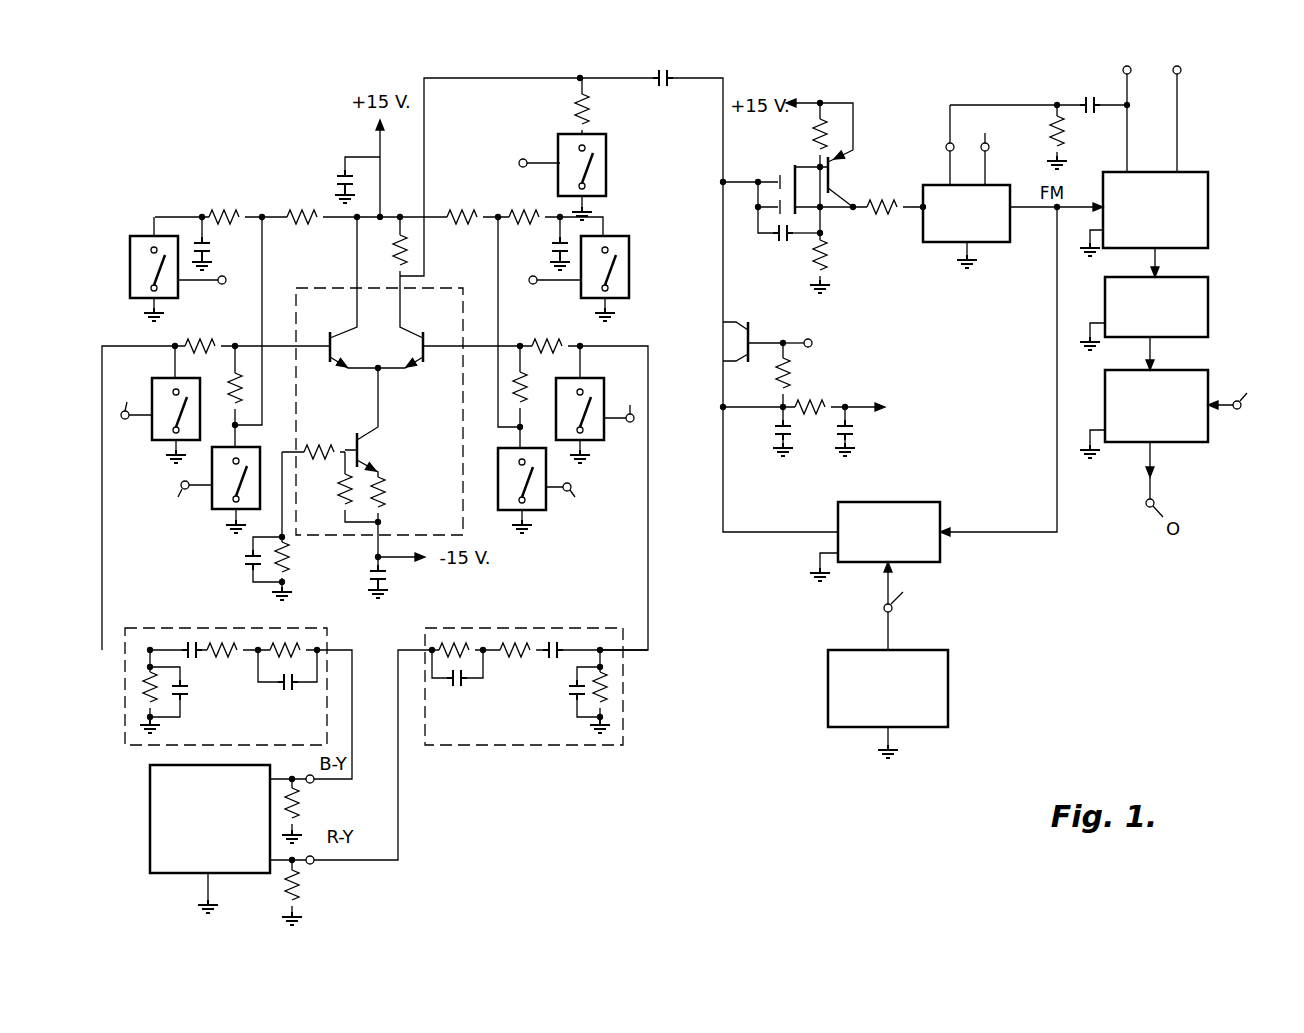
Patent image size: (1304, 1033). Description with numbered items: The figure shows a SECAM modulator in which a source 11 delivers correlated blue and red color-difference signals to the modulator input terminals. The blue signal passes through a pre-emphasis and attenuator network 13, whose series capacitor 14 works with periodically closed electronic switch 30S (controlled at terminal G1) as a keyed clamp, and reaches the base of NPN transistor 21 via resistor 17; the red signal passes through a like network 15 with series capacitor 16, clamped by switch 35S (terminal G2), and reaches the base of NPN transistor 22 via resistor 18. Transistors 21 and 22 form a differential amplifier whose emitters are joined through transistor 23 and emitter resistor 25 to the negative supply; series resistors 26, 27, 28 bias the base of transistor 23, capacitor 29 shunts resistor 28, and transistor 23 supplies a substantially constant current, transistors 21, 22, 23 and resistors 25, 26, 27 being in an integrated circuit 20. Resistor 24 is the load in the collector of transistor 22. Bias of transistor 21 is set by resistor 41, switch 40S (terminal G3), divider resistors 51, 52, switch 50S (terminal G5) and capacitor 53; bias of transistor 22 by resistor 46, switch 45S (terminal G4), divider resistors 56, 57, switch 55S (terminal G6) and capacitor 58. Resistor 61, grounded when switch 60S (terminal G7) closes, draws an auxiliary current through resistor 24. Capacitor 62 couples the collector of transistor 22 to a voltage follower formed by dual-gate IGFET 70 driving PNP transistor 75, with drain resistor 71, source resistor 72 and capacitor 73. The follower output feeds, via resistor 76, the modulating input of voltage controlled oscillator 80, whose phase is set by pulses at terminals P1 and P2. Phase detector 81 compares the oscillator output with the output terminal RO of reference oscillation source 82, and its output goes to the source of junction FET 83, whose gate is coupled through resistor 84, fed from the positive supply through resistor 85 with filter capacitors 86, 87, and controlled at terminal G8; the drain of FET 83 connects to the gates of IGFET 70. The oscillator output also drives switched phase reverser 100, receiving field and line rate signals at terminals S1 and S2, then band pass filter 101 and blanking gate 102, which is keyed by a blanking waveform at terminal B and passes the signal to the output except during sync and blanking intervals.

The source 11 is at (148, 823).
The B-Y signal pre-emphasis and attenuator network 13 is at (343, 633).
The series capacitor 14 is at (184, 642).
The R-Y signal pre-emphasis and attenuator network 15 is at (462, 627).
The series capacitor 16 is at (550, 662).
The resistor 17 is at (200, 334).
The resistor 18 is at (552, 335).
The integrated circuit 20 is at (437, 534).
The NPN transistor 21 is at (328, 336).
The NPN transistor 22 is at (425, 336).
The transistor 23 is at (352, 438).
The resistor 24 is at (392, 251).
The emitter resistor 25 is at (386, 492).
The resistor 26 is at (340, 504).
The resistor 27 is at (313, 469).
The resistor 28 is at (292, 560).
The capacitor 29 is at (246, 570).
The electronic switch 30S is at (156, 447).
The electronic switch 35S is at (603, 445).
The electronic switch 40S is at (212, 514).
The resistor 41 is at (231, 387).
The electronic switch 45S is at (547, 512).
The resistor 46 is at (526, 332).
The electronic switch 50S is at (130, 268).
The resistor 51 is at (304, 212).
The resistor 52 is at (228, 212).
The capacitor 53 is at (212, 250).
The electronic switch 55S is at (628, 264).
The resistor 56 is at (464, 208).
The resistor 57 is at (527, 208).
The capacitor 58 is at (552, 248).
The electronic switch 60S is at (605, 176).
The resistor 61 is at (592, 110).
The capacitor 62 is at (667, 68).
The insulated-gate field effect transistor 70 is at (778, 172).
The resistor 71 is at (810, 146).
The resistor 72 is at (832, 258).
The capacitor 73 is at (778, 246).
The PNP transistor 75 is at (825, 188).
The resistor 76 is at (889, 199).
The voltage controlled oscillator 80 is at (935, 246).
The phase detector 81 is at (900, 500).
The reference oscillation source 82 is at (912, 648).
The field effect transistor 83 is at (754, 327).
The resistor 84 is at (777, 380).
The resistor 85 is at (822, 398).
The filter capacitor 86 is at (775, 436).
The filter capacitor 87 is at (855, 437).
The switched phase reverser 100 is at (1210, 206).
The band pass filter 101 is at (1210, 304).
The blanking gate 102 is at (1210, 435).
The switch control signal input terminal G1 is at (129, 399).
The switch control signal input terminal G2 is at (622, 401).
The switch control signal input terminal G3 is at (180, 498).
The switch control signal input terminal G4 is at (574, 497).
The switch control signal input terminal G5 is at (212, 295).
The switch control signal input terminal G6 is at (542, 296).
The switch control signal input terminal G7 is at (523, 163).
The control signal input terminal G8 is at (815, 343).
The input terminal S1 is at (1180, 66).
The input terminal S2 is at (1123, 65).
The phase setting pulse input terminal P1 is at (998, 156).
The phase setting pulse input terminal P2 is at (945, 147).
The blanking signal input terminal B is at (1233, 392).
The output terminal RO is at (906, 610).